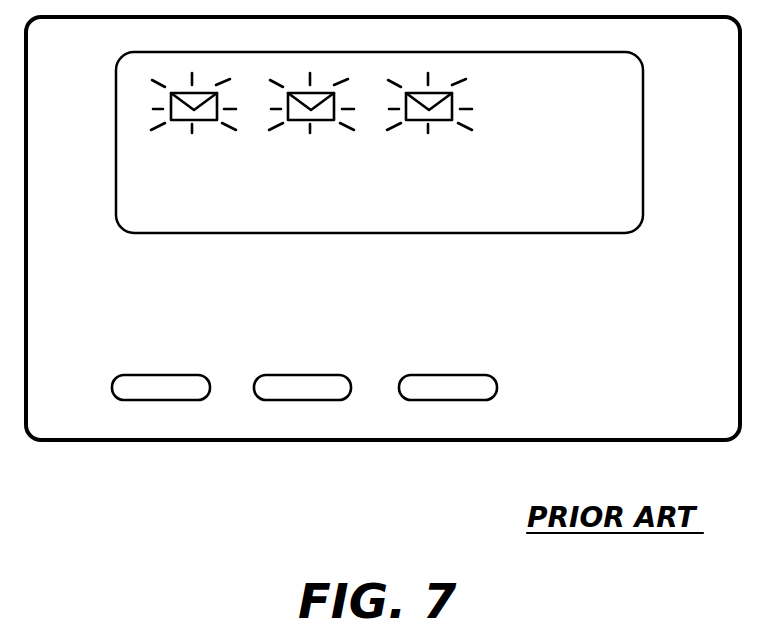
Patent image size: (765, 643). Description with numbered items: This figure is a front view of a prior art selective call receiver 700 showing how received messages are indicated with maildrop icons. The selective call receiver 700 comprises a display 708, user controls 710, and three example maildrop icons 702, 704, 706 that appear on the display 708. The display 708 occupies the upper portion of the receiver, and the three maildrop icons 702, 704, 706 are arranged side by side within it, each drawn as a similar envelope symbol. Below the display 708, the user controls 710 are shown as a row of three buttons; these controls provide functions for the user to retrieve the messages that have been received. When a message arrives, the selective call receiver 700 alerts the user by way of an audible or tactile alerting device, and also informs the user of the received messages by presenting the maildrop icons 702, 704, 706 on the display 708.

The selective call receiver 700 is at (403, 559).
The maildrop icon 702 is at (183, 122).
The maildrop icon 704 is at (304, 122).
The maildrop icon 706 is at (423, 122).
The display 708 is at (625, 235).
The user controls 710 is at (138, 375).